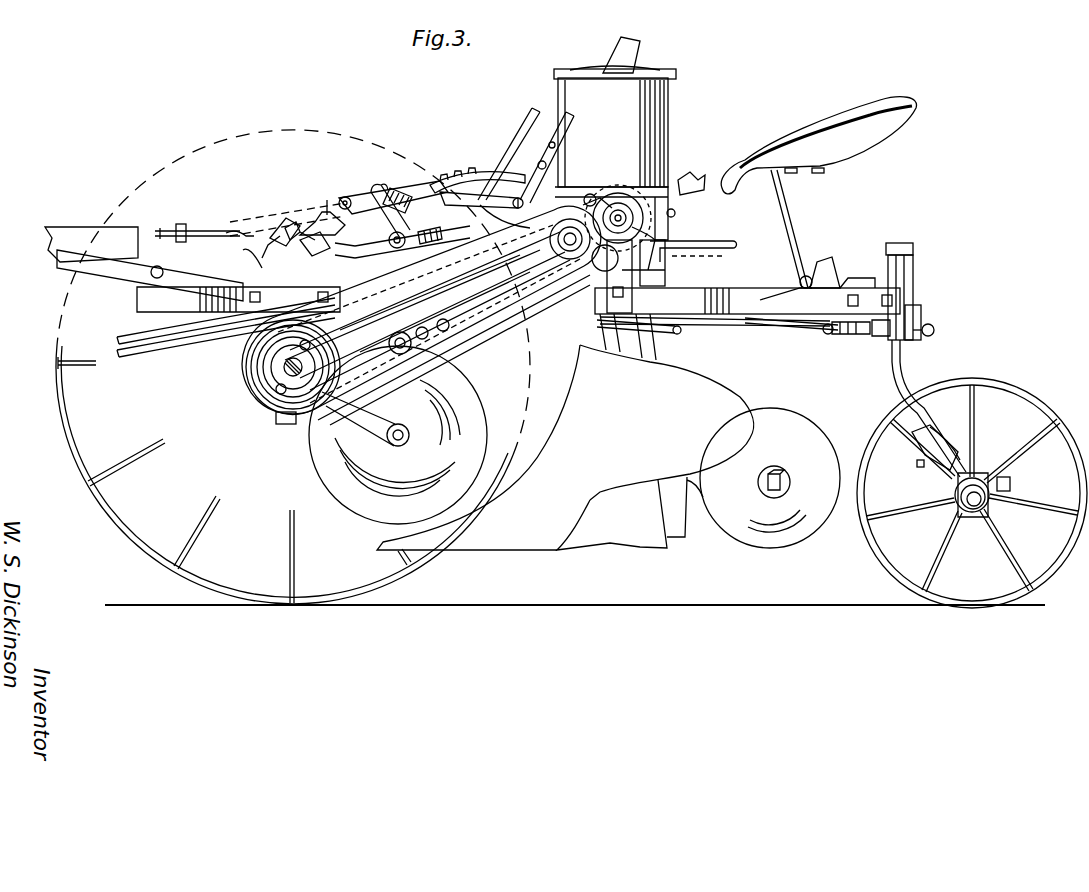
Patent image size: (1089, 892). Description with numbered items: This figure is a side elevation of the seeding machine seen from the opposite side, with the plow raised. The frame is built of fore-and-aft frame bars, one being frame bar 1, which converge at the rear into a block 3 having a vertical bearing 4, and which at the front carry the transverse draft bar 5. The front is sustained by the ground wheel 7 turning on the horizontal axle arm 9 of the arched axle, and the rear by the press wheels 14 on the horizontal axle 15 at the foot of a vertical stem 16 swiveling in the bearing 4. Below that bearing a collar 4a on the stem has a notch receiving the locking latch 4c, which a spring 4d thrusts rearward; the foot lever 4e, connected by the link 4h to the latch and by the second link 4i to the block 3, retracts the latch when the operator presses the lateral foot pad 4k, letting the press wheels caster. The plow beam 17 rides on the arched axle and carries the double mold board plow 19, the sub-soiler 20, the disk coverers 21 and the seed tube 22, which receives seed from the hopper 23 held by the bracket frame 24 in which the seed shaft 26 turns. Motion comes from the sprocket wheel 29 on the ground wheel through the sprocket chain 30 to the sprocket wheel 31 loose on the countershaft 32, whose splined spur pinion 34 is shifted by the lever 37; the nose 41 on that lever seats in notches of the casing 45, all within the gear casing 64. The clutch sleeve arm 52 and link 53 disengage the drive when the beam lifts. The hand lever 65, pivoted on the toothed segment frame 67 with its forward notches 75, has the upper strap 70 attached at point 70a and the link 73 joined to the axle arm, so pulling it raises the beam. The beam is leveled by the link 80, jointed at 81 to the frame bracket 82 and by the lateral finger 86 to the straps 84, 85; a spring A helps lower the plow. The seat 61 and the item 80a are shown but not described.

The frame bar 1 is at (762, 313).
The casting or block 3 is at (878, 286).
The vertical bearing 4 is at (912, 283).
The collar 4a is at (918, 319).
The locking latch 4c is at (876, 335).
The spring 4d is at (862, 328).
The foot lever 4e is at (790, 284).
The link 4h is at (790, 327).
The second link 4i is at (830, 281).
The lateral foot pad 4k is at (826, 258).
The draft bar 5 is at (132, 280).
The ground wheel 7 is at (122, 523).
The horizontal axle arm 9 is at (282, 385).
The press wheel 14 is at (1040, 399).
The horizontal axle 15 is at (973, 513).
The vertical stem 16 is at (903, 367).
The plow beam 17 is at (187, 338).
The double mold board plow 19 is at (565, 432).
The sub-soiler 20 is at (621, 532).
The disk coverer 21 is at (770, 540).
The seed tube 22 is at (666, 273).
The seed can or hopper 23 is at (636, 137).
The bracket or frame 24 is at (632, 293).
The seed shaft 26 is at (621, 216).
The sprocket wheel 29 is at (272, 368).
The sprocket chain 30 is at (470, 330).
The sprocket wheel 31 is at (492, 234).
The countershaft 32 is at (568, 252).
The spur pinion 34 is at (410, 286).
The lever 37 is at (712, 240).
The lug or nose 41 is at (706, 259).
The casing 45 is at (620, 190).
The arm 52 is at (596, 193).
The link 53 is at (545, 182).
The seat 61 is at (828, 119).
The gear casing 64 is at (428, 383).
The hand lever 65 is at (618, 48).
The toothed segment frame 67 is at (478, 168).
The upper strap 70 is at (430, 178).
The connection point of upper strap 70a is at (515, 192).
The link 73 is at (378, 185).
The forward notch 75 is at (452, 185).
The link 80 is at (278, 228).
The spring seat 80a is at (302, 216).
The joint 81 is at (246, 262).
The bracket 82 is at (212, 268).
The strap 84 is at (349, 196).
The strap 85 is at (371, 244).
The lateral finger 86 is at (333, 210).
The spring A is at (238, 211).